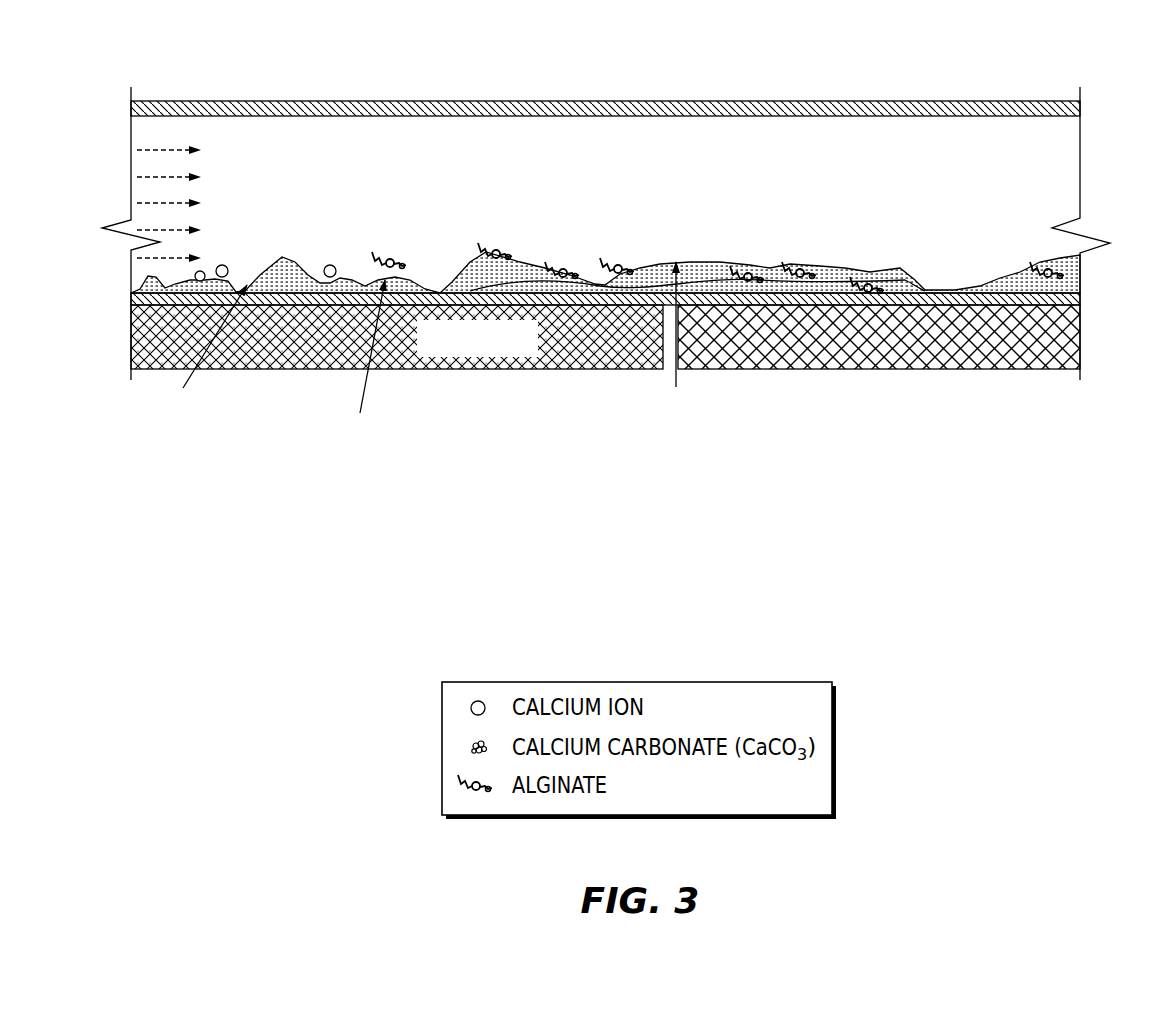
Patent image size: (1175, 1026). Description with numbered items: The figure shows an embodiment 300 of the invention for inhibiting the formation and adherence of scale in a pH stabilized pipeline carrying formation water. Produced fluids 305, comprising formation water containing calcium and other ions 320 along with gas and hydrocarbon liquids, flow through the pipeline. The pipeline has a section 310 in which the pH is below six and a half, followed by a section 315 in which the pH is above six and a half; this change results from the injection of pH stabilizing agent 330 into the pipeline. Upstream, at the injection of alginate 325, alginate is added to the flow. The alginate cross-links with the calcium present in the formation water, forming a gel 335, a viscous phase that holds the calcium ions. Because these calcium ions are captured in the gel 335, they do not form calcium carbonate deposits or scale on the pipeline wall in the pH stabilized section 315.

The embodiment 300 is at (1046, 66).
The produced fluids 305 is at (605, 183).
The section with pH 6.5 310 is at (488, 372).
The section of pH 6.5 315 is at (945, 370).
The formation water containing calcium and other ions 320 is at (183, 522).
The injection of alginate 325 is at (410, 485).
The injection of pH stabilizing agent 330 is at (690, 495).
The gel 335 is at (825, 280).